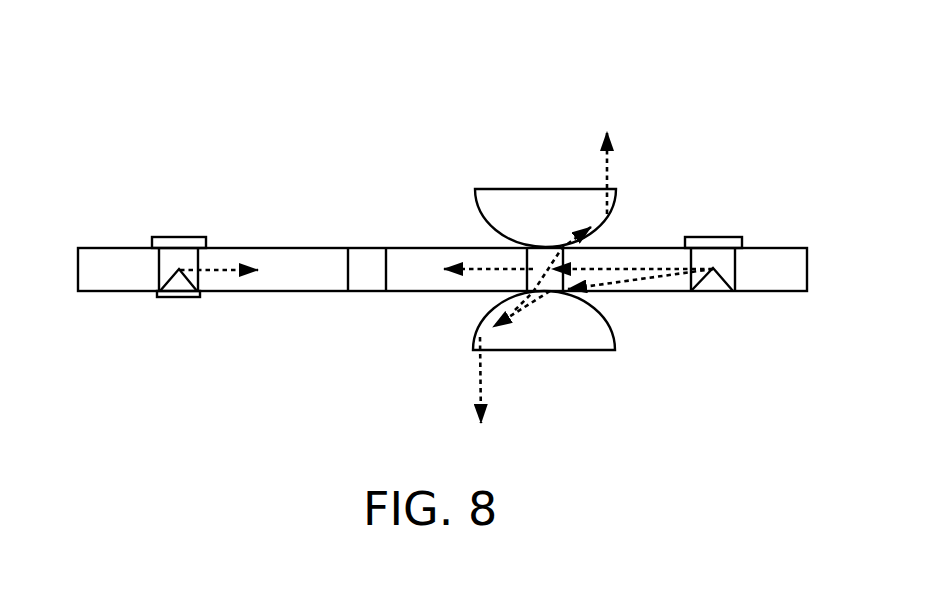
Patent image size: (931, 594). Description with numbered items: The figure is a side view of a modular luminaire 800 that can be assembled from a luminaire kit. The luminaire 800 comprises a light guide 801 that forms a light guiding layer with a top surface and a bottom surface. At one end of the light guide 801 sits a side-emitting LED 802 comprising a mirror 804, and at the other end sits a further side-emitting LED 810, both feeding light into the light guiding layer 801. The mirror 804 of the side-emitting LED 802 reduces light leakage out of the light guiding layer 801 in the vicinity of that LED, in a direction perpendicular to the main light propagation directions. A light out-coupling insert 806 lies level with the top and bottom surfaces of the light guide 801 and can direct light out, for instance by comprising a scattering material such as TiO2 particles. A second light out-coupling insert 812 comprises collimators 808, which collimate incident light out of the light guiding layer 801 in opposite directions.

The luminaire 800 is at (150, 133).
The light guide 801 is at (288, 247).
The side-emitting LED 802 is at (157, 282).
The mirror 804 is at (188, 297).
The light out-coupling insert 806 is at (372, 293).
The collimators 808 is at (520, 187).
The side-emitting LED 810 is at (725, 236).
The light out-coupling insert 812 is at (567, 263).